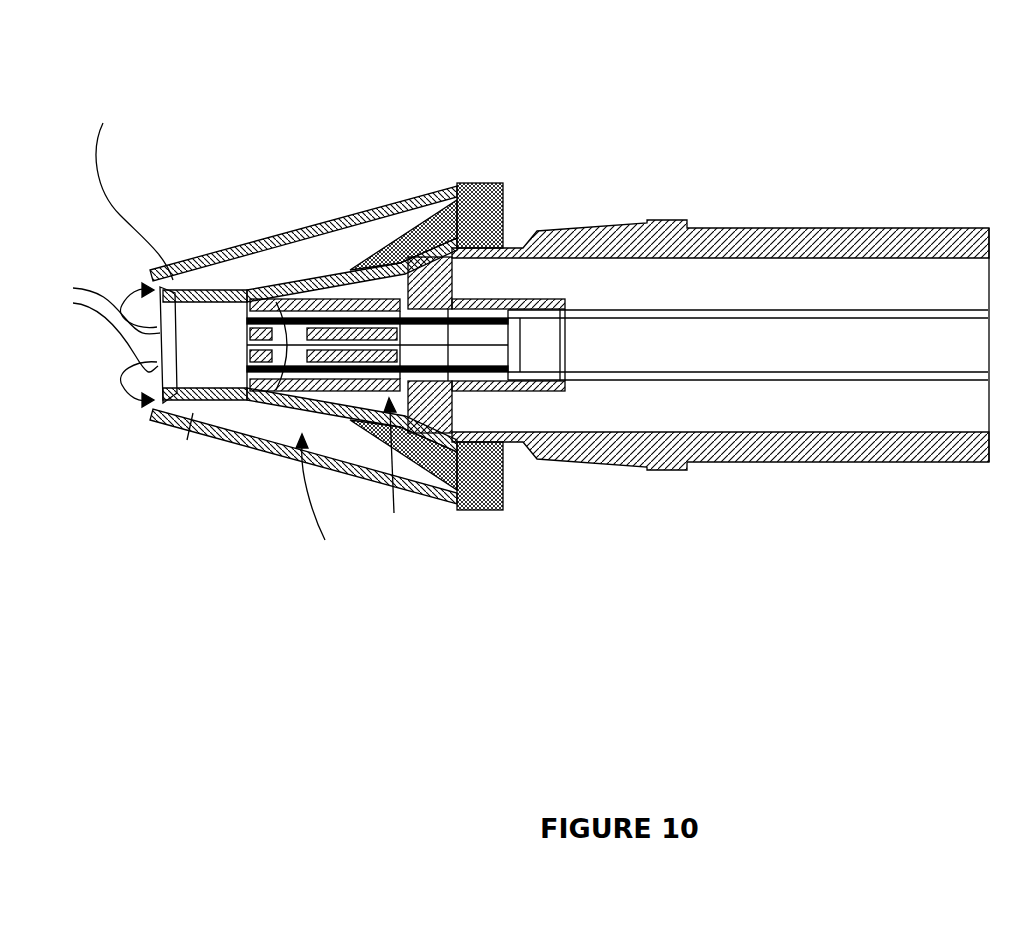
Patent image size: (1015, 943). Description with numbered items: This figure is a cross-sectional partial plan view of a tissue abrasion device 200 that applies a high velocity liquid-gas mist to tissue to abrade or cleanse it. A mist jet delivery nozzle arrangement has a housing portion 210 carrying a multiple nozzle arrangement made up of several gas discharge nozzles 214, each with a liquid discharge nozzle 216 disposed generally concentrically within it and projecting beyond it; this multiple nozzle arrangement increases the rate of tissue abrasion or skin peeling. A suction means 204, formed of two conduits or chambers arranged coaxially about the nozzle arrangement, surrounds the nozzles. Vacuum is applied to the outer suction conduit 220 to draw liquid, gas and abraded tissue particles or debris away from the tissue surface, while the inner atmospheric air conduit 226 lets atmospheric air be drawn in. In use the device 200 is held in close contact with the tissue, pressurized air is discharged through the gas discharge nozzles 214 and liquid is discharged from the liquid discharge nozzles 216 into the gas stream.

The tissue abrasion device 200 is at (362, 128).
The suction means 204 is at (264, 220).
The housing portion 210 is at (783, 228).
The gas discharge nozzle 214 is at (262, 393).
The liquid discharge nozzle 216 is at (283, 400).
The outer suction conduit 220 is at (357, 248).
The inner atmospheric air conduit 226 is at (320, 226).